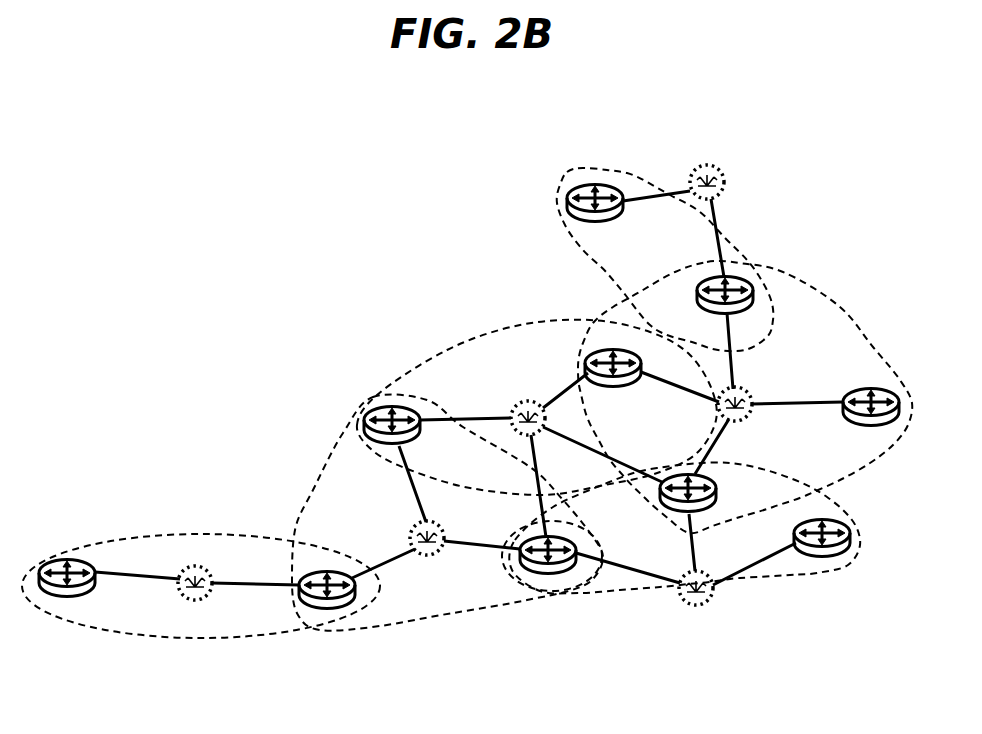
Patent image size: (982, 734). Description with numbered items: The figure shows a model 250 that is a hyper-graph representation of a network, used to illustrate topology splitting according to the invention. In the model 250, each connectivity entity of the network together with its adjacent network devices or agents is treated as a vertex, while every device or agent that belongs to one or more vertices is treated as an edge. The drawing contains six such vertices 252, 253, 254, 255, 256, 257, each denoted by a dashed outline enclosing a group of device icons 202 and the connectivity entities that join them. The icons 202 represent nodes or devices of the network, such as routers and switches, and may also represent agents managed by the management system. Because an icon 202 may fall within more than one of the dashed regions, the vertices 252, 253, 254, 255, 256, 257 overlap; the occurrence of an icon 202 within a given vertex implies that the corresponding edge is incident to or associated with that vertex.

The model 250 is at (338, 216).
The icons 202 is at (370, 405).
The vertex 252 is at (113, 537).
The vertex 253 is at (318, 482).
The vertex 254 is at (447, 350).
The vertex 255 is at (840, 570).
The vertex 256 is at (843, 300).
The vertex 257 is at (560, 183).